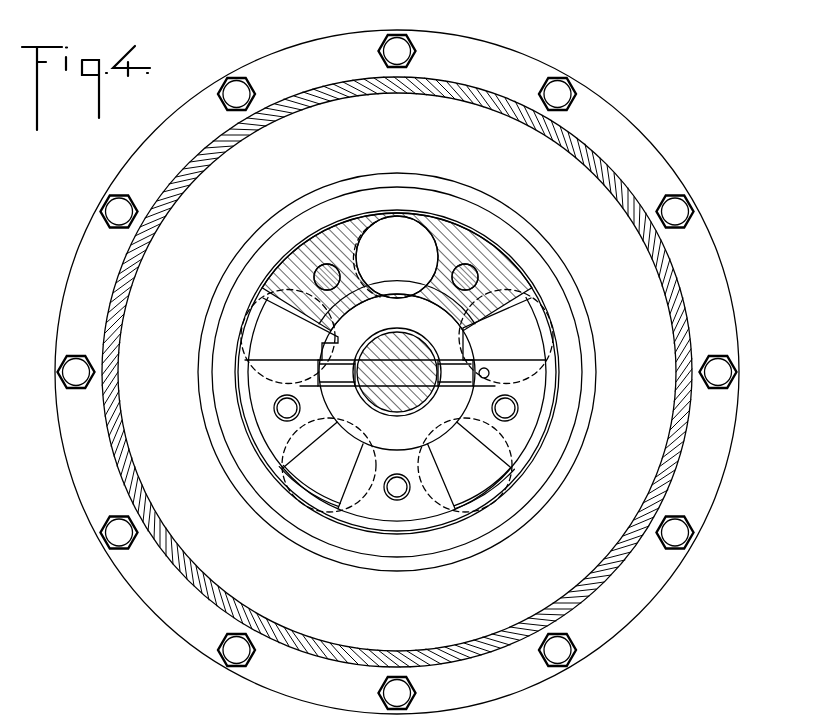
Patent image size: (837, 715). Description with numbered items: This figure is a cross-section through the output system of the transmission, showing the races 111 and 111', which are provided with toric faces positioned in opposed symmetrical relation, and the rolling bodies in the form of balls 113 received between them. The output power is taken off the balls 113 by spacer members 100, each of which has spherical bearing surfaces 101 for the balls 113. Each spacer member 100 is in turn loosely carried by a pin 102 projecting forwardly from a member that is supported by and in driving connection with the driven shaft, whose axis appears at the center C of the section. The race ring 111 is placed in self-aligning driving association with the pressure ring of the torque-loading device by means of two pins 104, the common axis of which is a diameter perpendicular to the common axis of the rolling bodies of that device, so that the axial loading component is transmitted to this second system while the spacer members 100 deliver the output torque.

The spacer members 100 is at (318, 250).
The spherical bearing surfaces 101 is at (341, 236).
The pin 102 is at (317, 270).
The pins 104 is at (455, 368).
The race ring 111 is at (397, 384).
The race 111' is at (397, 372).
The balls 113 is at (397, 364).
The center C is at (400, 387).